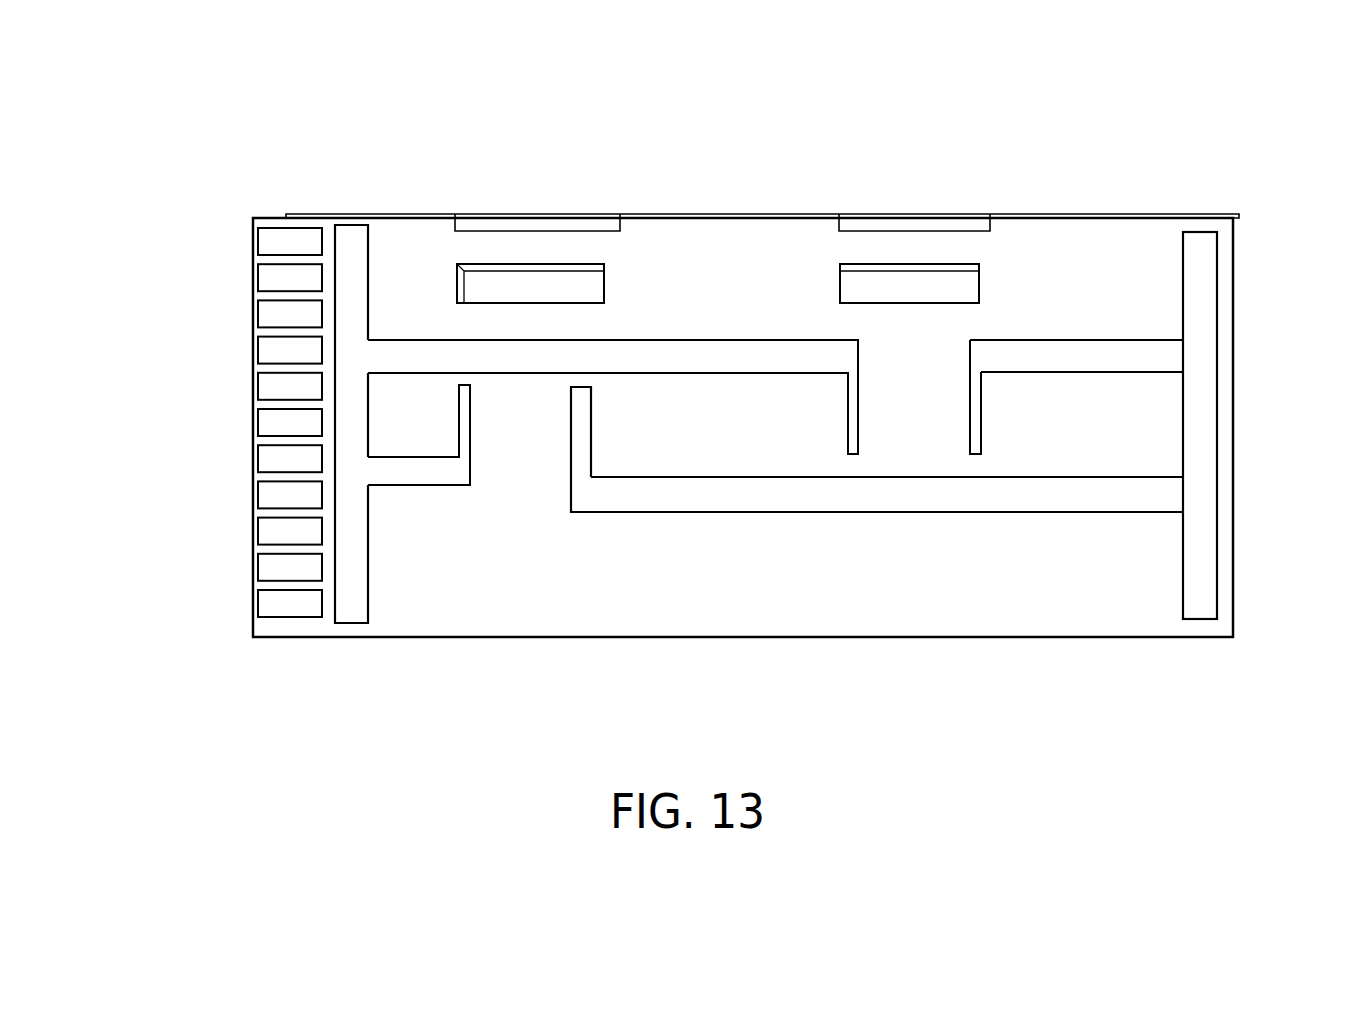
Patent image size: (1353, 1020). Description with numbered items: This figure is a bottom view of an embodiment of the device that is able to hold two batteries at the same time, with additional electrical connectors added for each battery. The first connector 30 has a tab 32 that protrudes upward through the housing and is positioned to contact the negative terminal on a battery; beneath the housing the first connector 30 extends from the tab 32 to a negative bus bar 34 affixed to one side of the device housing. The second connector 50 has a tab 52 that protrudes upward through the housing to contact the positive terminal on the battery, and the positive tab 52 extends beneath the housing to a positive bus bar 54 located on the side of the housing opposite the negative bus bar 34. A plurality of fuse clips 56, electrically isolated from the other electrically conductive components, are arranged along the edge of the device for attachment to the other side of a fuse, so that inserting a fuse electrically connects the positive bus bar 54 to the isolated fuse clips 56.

The first connector 30 is at (970, 497).
The tab 32 is at (580, 408).
The negative bus bar 34 is at (1197, 304).
The second connector 50 is at (405, 475).
The tab 52 is at (473, 418).
The positive bus bar 54 is at (347, 512).
The fuse clips 56 is at (278, 315).